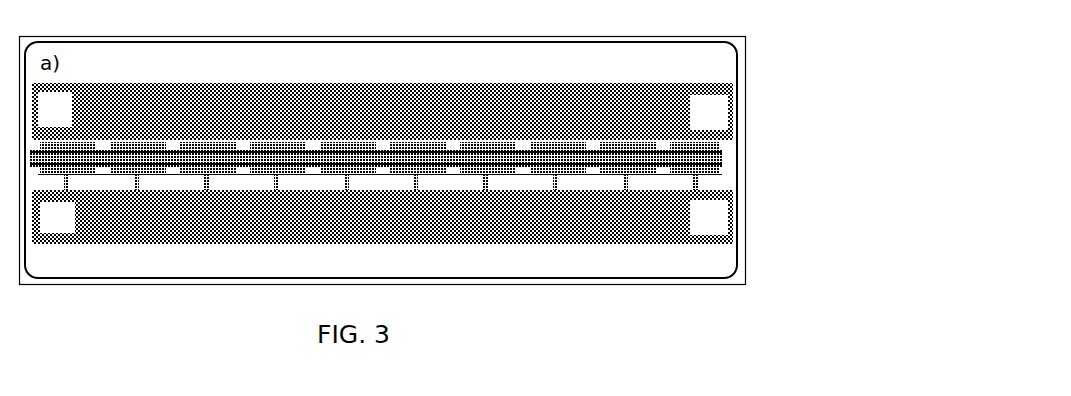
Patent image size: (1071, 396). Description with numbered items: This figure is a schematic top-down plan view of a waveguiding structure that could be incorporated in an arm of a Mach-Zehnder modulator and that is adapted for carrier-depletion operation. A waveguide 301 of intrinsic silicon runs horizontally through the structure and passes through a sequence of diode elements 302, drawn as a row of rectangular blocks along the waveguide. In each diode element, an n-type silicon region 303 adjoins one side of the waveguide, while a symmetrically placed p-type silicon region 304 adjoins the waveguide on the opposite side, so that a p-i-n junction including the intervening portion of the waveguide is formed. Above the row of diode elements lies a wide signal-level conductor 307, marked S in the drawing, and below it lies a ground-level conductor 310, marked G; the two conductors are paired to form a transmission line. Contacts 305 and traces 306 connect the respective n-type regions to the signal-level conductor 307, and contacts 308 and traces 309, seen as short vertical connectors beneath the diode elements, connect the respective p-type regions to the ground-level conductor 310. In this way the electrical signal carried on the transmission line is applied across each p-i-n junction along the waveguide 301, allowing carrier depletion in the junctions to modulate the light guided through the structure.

The waveguide 301 is at (732, 158).
The diode elements 302 is at (150, 137).
The n-type silicon region 303 is at (563, 150).
The p-type silicon region 304 is at (562, 165).
The contacts 305 is at (285, 142).
The traces 306 is at (352, 142).
The signal-level conductor 307 is at (687, 85).
The contacts 308 is at (363, 173).
The traces 309 is at (487, 183).
The ground-level conductor 310 is at (697, 247).